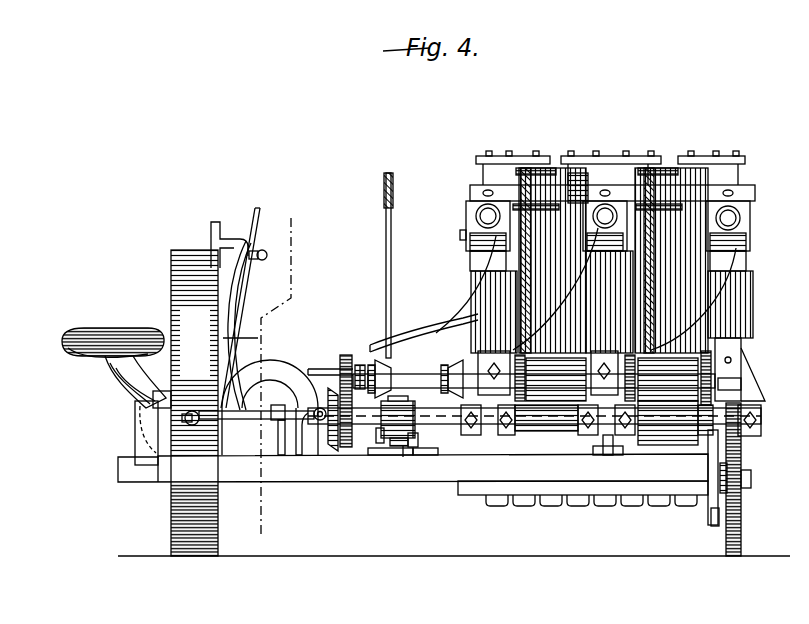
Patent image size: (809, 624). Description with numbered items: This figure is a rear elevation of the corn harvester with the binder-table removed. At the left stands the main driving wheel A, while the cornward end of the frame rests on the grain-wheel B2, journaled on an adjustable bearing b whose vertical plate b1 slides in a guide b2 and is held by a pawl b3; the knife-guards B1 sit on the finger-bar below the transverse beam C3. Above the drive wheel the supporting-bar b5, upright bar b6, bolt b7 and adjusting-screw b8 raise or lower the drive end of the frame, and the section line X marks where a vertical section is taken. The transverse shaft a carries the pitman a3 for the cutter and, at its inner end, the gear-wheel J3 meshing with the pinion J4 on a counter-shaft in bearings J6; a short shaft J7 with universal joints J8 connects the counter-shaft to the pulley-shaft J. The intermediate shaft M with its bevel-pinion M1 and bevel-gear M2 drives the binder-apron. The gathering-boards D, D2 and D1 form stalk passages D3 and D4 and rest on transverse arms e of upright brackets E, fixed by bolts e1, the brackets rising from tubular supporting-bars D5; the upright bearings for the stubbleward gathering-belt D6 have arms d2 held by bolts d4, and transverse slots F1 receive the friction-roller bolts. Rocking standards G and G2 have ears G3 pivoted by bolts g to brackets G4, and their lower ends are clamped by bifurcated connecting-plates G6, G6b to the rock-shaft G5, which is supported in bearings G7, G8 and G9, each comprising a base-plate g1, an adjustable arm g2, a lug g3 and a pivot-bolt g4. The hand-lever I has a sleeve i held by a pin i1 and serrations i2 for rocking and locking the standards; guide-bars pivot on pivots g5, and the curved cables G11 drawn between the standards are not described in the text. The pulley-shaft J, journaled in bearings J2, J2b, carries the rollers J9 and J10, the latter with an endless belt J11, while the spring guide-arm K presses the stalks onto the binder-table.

The main driving wheel A is at (185, 403).
The knife-guards B1 is at (525, 496).
The grain-wheel B2 is at (743, 479).
The transverse beam C3 is at (413, 468).
The intermediate shaft M is at (274, 407).
The bevel-pinion M1 is at (325, 362).
The bevel-gear M2 is at (183, 417).
The transverse shaft a is at (287, 437).
The pitman a3 is at (308, 431).
The gear-wheel J3 is at (338, 440).
The transverse rock-shaft G5 is at (448, 430).
The pulley-shaft J is at (662, 508).
The short shaft J7 is at (380, 358).
The universal joint J8 is at (445, 355).
The pinion J4 is at (350, 360).
The bearings J6 is at (352, 357).
The pin i1 is at (385, 400).
The radial notches or serrations i2 is at (404, 410).
The sleeve i is at (374, 440).
The pivot-bolt g4 is at (410, 432).
The lug g3 is at (380, 448).
The adjustable arm g2 is at (425, 465).
The base-plate g1 is at (400, 449).
The bearing G7 is at (469, 409).
The bifurcated connecting-plates G6 is at (515, 425).
The stubbleward gathering-belt D6 is at (625, 430).
The pivots g5 is at (608, 457).
The endless belt J11 is at (670, 437).
The bearing G9 is at (763, 422).
The roller J9 is at (548, 357).
The roller J10 is at (655, 360).
The bearings J2 is at (740, 378).
The bifurcated connecting-plates G6b is at (735, 357).
The hand-lever I is at (377, 258).
The spring guide-arm K is at (465, 300).
The adjustable bearing b is at (700, 480).
The supporting-bar b5 is at (225, 270).
The upright bar b6 is at (245, 296).
The bolt b7 is at (260, 247).
The adjusting-screw b8 is at (248, 338).
The section line X is at (270, 375).
The upright brackets E is at (468, 160).
The laterally-projecting arm d2 is at (747, 180).
The bolt d4 is at (462, 187).
The brackets G4 is at (458, 210).
The tubular supporting-bars D5 is at (742, 218).
The bolts g is at (452, 230).
The ears G3 is at (462, 250).
The bearing G8 is at (463, 322).
The rocking standard G is at (593, 302).
The rocking standard G2 is at (745, 300).
The passage D3 is at (545, 148).
The passage D4 is at (663, 152).
The transverse slots F1 is at (585, 175).
The stubbleward gathering-board D is at (508, 148).
The intermediate gathering-board D2 is at (620, 148).
The cornward gathering-board D1 is at (715, 148).
The transverse arms e is at (495, 150).
The bolts e1 is at (535, 148).
The cable G11 is at (586, 289).
The bearings J2b is at (508, 323).
The pawl b3 is at (700, 455).
The guide b2 is at (702, 515).
The vertical plate b1 is at (708, 518).